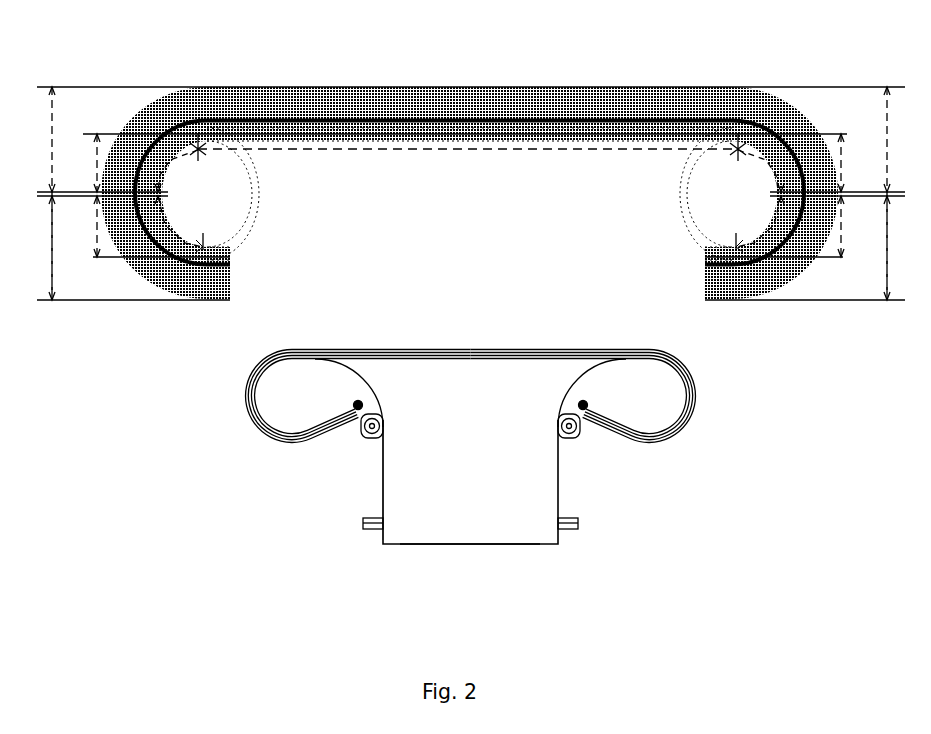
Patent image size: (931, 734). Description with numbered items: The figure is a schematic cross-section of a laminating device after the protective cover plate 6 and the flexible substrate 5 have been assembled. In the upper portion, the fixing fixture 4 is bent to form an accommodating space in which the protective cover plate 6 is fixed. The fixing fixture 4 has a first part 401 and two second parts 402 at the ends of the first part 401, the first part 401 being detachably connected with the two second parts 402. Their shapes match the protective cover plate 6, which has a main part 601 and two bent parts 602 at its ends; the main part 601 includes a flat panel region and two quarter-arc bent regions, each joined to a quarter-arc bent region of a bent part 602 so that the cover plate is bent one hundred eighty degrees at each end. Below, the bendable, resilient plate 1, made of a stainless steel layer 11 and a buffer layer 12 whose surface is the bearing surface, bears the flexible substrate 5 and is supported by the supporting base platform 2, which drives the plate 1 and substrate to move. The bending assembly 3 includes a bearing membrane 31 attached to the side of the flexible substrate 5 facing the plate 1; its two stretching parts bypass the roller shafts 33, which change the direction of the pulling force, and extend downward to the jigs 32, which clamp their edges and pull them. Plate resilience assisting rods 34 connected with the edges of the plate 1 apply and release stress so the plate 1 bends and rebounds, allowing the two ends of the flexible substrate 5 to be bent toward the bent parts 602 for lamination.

The plate 1 is at (471, 358).
The stainless steel layer 11 is at (520, 358).
The buffer layer 12 is at (482, 355).
The supporting base platform 2 is at (473, 522).
The bending assembly 3 is at (408, 451).
The bearing membrane 31 is at (382, 482).
The jig 32 is at (363, 522).
The roller shaft 33 is at (362, 433).
The plate resilience assisting rod 34 is at (358, 410).
The fixing fixture 4 is at (323, 100).
The first part 401 is at (468, 193).
The second part 402 is at (468, 248).
The flexible substrate 5 is at (471, 366).
The protective cover plate 6 is at (578, 137).
The main part 601 is at (470, 163).
The bent part 602 is at (470, 226).